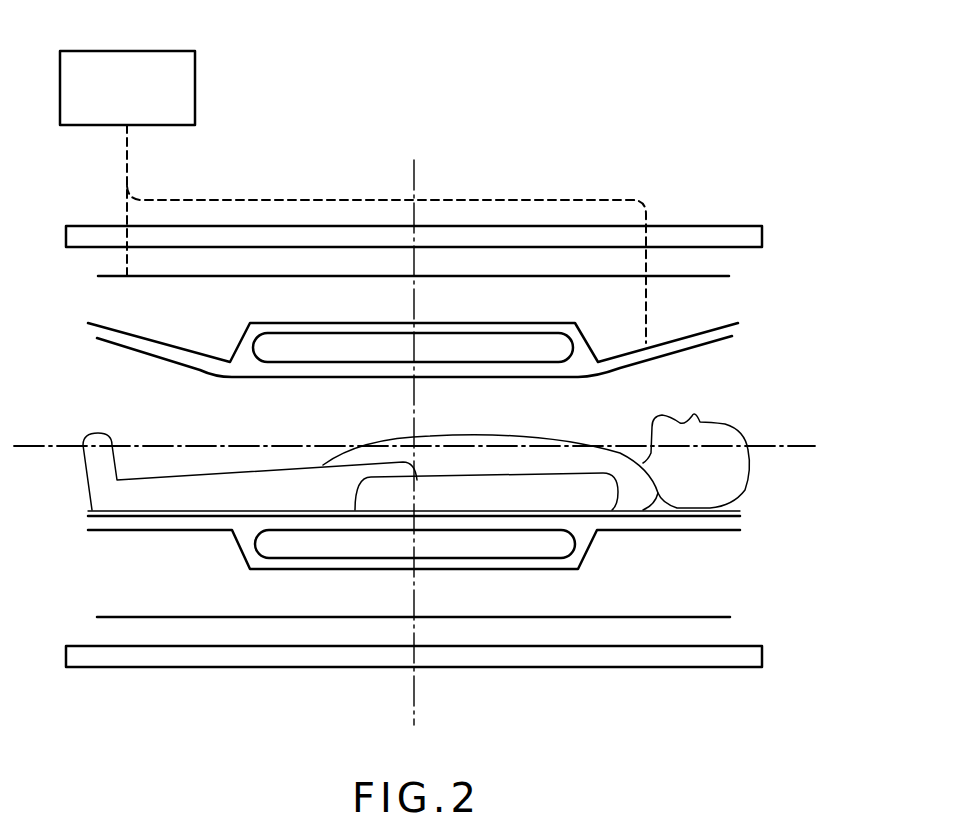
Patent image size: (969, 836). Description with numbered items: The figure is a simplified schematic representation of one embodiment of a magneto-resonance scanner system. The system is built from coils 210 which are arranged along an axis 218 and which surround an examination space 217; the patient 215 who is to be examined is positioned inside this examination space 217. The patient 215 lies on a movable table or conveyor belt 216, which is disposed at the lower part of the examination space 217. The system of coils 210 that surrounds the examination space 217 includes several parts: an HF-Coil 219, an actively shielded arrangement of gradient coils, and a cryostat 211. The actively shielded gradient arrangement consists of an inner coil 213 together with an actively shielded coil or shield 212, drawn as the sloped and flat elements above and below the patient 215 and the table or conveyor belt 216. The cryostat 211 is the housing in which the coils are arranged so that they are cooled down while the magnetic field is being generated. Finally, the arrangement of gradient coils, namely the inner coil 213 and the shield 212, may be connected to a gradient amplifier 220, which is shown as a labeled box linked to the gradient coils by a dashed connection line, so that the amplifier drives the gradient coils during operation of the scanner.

The coils 210 is at (586, 163).
The cryostat 211 is at (700, 230).
The actively shielded coil or shield 212 is at (700, 277).
The inner coil 213 is at (700, 343).
The patient 215 is at (497, 435).
The movable table or conveyor belt 216 is at (663, 530).
The examination space 217 is at (133, 398).
The axis 218 is at (217, 445).
The HF-Coil 219 is at (473, 348).
The gradient amplifier 220 is at (123, 51).